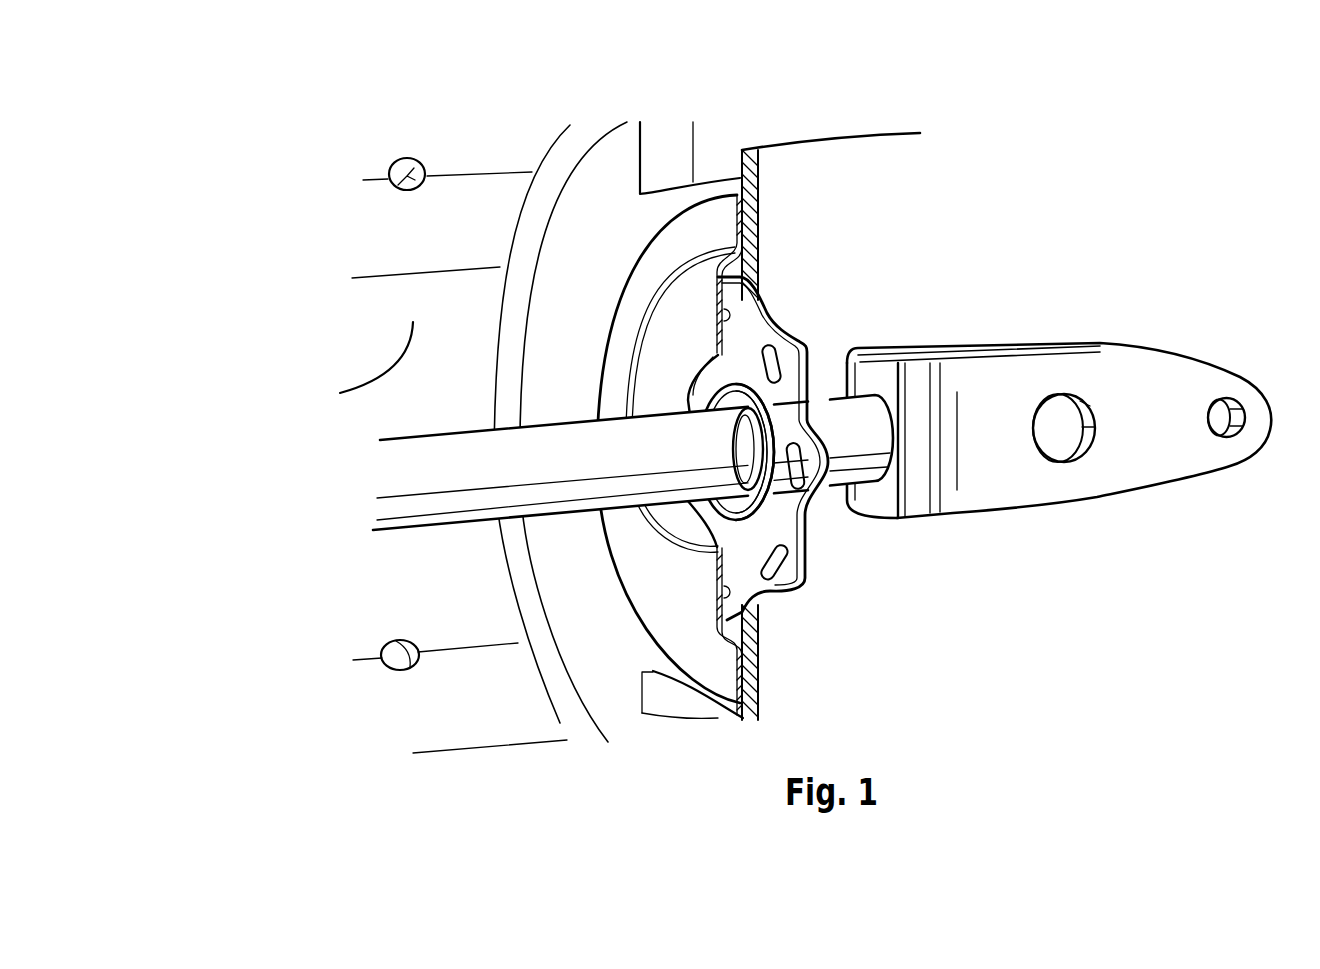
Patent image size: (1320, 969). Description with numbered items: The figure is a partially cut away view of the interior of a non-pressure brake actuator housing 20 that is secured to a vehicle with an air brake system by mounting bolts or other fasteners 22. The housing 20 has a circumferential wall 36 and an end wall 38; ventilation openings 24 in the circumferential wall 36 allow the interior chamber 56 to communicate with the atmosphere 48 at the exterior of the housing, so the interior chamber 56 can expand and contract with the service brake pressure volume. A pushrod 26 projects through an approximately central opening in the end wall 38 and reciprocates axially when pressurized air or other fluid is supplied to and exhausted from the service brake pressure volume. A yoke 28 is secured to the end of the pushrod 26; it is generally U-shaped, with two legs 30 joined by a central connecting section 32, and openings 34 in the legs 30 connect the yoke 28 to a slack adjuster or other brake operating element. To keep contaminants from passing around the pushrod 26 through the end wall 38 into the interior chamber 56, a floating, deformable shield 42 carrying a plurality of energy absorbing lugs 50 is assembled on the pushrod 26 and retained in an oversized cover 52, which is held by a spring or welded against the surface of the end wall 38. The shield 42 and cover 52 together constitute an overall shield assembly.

The brake actuator housing 20 is at (777, 391).
The mounting bolts 22 is at (872, 137).
The ventilation openings 24 is at (403, 180).
The pushrod 26 is at (417, 527).
The yoke 28 is at (1118, 468).
The legs 30 is at (1067, 431).
The central connecting section 32 is at (882, 492).
The openings 34 is at (1062, 395).
The circumferential wall 36 is at (408, 373).
The end wall 38 is at (757, 264).
The shield 42 is at (603, 438).
The atmosphere 48 is at (1067, 431).
The energy absorbing lugs 50 is at (807, 343).
The cover 52 is at (637, 260).
The interior chamber 56 is at (435, 680).